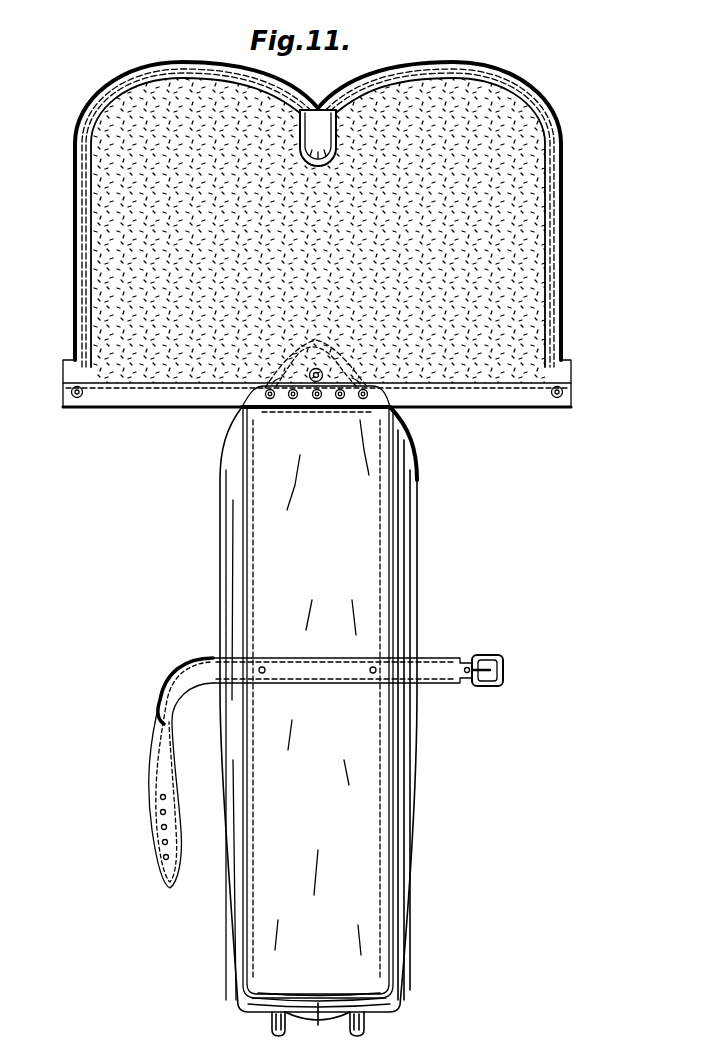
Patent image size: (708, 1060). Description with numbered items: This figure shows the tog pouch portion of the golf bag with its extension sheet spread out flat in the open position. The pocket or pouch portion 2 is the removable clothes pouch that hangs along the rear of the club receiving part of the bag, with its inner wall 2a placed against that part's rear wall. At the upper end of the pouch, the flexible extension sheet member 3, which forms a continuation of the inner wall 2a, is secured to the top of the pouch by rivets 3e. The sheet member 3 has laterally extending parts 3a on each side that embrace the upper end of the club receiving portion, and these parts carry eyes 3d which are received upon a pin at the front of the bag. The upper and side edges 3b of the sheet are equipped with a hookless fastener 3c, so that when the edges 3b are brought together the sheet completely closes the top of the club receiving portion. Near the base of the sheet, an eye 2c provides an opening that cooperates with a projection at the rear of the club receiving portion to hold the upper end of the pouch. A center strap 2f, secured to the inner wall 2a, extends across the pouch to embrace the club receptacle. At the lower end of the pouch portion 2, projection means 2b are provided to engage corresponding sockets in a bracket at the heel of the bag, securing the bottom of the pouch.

The pocket or pouch portion 2 is at (418, 573).
The inner wall 2a is at (355, 800).
The projection means 2b is at (272, 1028).
The eye 2c is at (323, 371).
The center strap 2f is at (217, 667).
The extension sheet member 3 is at (527, 117).
The laterally extending parts 3a is at (168, 372).
The upper edges 3b is at (93, 100).
The hookless fastener 3c is at (318, 108).
The eyes 3d is at (71, 392).
The rivets 3e is at (366, 392).